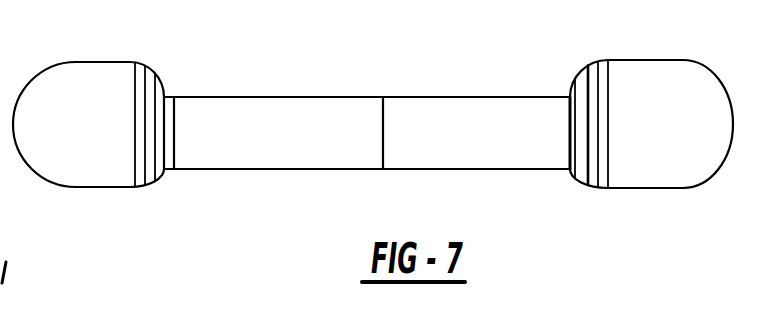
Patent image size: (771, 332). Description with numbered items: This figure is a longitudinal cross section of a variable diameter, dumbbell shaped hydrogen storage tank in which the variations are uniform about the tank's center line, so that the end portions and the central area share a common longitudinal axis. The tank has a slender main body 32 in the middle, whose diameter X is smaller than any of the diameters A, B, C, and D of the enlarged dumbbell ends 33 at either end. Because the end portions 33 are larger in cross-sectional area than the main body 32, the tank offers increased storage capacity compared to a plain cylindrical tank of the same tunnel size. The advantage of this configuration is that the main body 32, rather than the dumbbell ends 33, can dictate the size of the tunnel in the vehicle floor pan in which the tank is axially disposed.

The main body 32 is at (367, 127).
The dumbbell ends 33 is at (635, 134).
The diameter of the main body X is at (429, 155).
The diameter A is at (571, 148).
The diameter B is at (583, 175).
The diameter C is at (612, 182).
The diameter D is at (608, 160).